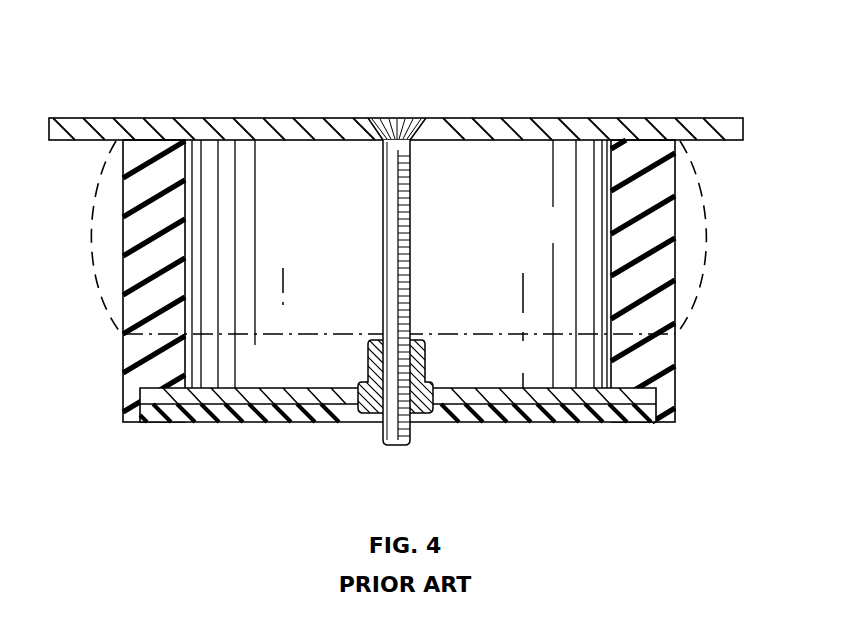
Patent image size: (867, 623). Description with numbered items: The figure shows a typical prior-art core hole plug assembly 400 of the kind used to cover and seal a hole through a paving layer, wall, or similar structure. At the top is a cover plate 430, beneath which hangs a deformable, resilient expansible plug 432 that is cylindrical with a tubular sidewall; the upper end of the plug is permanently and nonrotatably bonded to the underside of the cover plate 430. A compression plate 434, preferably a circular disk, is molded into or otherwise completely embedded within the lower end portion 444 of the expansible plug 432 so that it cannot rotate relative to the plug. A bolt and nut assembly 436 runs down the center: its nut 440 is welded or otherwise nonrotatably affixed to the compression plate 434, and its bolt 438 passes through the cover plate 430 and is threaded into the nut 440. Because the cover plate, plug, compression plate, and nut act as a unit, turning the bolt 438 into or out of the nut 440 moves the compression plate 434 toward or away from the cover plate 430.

The core hole plug assembly 400 is at (712, 88).
The cover plate 430 is at (482, 117).
The expansible plug 432 is at (123, 350).
The compression plate 434 is at (275, 388).
The bolt and nut assembly 436 is at (440, 261).
The bolt 438 is at (383, 212).
The nut 440 is at (425, 346).
The lower end portion 444 is at (421, 313).